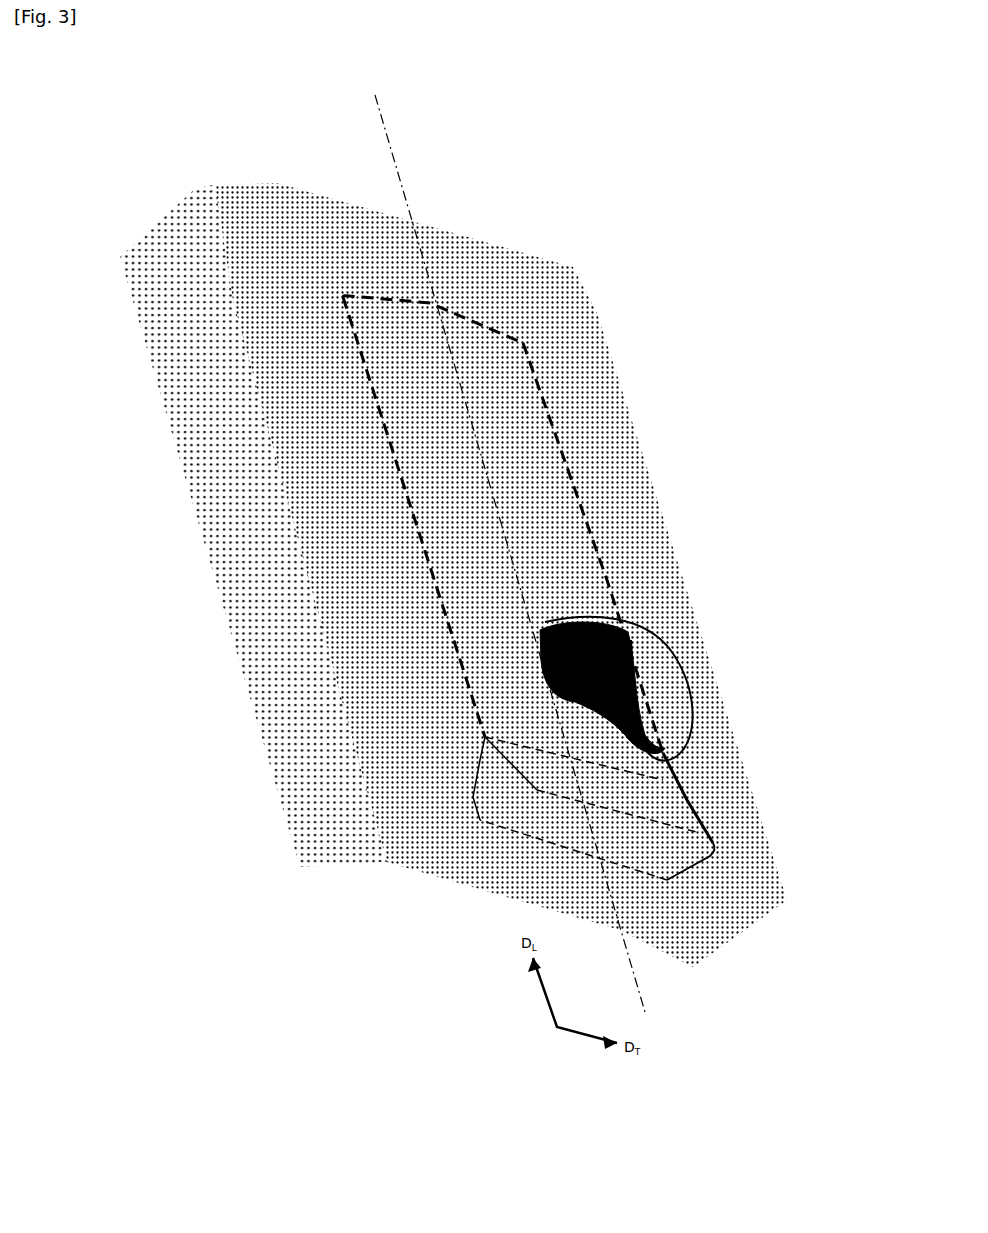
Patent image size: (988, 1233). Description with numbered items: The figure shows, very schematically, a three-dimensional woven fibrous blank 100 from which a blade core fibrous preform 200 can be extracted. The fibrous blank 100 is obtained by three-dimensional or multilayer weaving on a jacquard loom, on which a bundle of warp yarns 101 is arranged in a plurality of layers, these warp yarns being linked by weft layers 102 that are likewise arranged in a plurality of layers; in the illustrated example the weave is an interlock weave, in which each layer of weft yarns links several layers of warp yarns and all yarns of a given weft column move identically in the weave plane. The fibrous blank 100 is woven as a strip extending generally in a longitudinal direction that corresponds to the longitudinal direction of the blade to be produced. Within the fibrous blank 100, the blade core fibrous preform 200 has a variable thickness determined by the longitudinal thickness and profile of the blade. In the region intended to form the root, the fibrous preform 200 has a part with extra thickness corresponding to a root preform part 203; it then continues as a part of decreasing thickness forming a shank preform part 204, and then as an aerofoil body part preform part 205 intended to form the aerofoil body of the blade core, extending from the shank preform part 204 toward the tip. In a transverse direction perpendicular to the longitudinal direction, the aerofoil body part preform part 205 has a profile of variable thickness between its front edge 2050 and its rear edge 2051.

The fibrous blank 100 is at (453, 540).
The warp yarns 101 is at (313, 193).
The weft layers 102 is at (297, 870).
The blade core fibrous preform 200 is at (627, 667).
The root preform part 203 is at (478, 800).
The shank preform part 204 is at (483, 742).
The aerofoil body part preform part 205 is at (523, 540).
The front edge 2050 is at (438, 590).
The rear edge 2051 is at (577, 480).